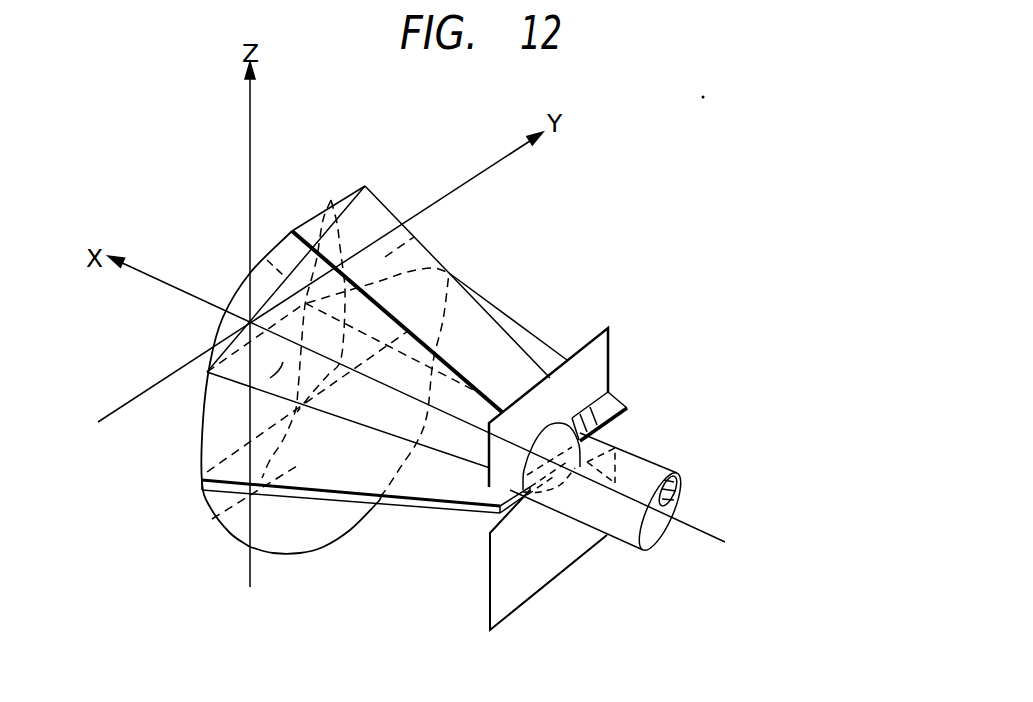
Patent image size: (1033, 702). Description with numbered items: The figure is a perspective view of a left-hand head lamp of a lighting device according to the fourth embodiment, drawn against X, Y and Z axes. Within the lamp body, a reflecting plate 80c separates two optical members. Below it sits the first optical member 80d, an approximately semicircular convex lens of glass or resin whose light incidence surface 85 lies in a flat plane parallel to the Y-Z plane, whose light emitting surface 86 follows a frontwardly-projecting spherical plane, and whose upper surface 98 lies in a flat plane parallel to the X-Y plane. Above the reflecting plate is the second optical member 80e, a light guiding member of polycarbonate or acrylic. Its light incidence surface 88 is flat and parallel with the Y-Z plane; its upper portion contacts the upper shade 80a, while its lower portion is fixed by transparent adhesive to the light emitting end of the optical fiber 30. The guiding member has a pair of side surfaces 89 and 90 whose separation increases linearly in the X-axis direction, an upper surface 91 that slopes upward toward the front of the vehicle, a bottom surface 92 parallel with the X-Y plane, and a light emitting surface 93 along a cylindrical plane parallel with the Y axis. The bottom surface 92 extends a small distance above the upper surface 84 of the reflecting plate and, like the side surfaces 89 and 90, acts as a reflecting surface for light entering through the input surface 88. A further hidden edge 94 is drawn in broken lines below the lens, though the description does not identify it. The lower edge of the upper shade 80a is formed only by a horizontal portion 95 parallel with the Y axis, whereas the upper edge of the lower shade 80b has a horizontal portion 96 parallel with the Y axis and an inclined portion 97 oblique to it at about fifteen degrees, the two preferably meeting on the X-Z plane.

The optical fiber 30 is at (683, 487).
The upper shade 80a is at (597, 360).
The lower shade 80b is at (573, 540).
The reflecting plate 80c is at (343, 460).
The first optical member 80d is at (270, 517).
The second optical member 80e is at (372, 208).
The upper surface of the reflecting plate 84 is at (457, 487).
The light incidence surface 85 is at (318, 518).
The light emitting surface 86 is at (202, 486).
The light incidence surface 88 is at (603, 433).
The side surface 89 is at (283, 362).
The side surface 90 is at (408, 231).
The upper surface 91 is at (483, 293).
The bottom surface 92 is at (300, 505).
The light emitting surface 93 is at (267, 260).
The hidden circular edge 94 is at (413, 480).
The horizontal portion 95 is at (633, 410).
The horizontal portion 96 is at (523, 510).
The inclined portion 97 is at (593, 460).
The upper surface 98 is at (331, 200).